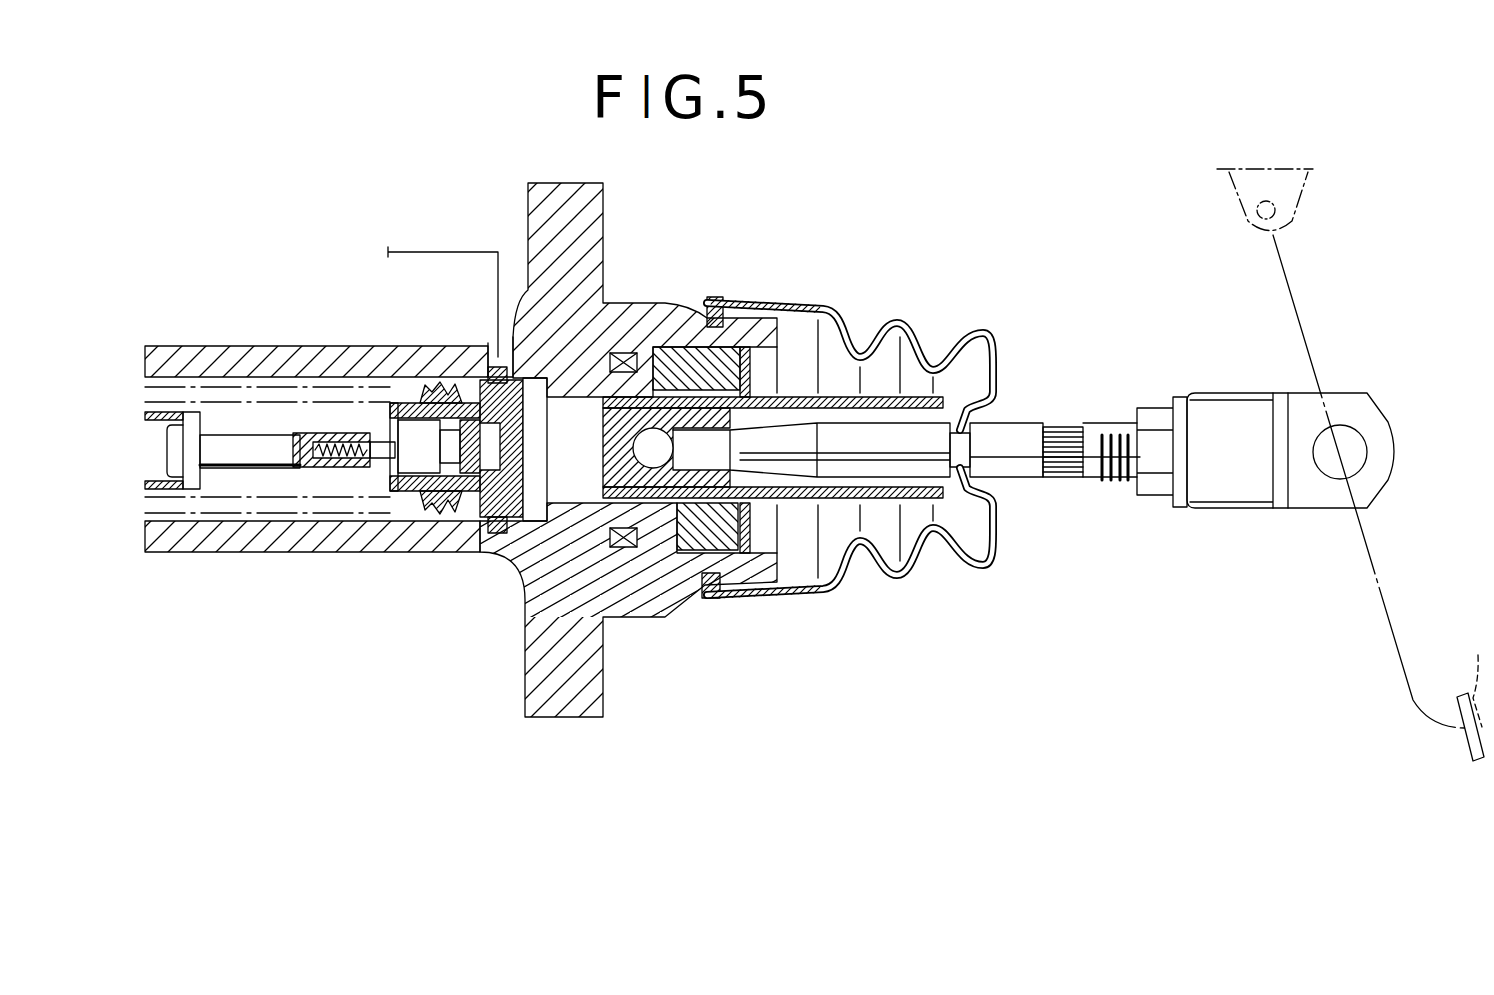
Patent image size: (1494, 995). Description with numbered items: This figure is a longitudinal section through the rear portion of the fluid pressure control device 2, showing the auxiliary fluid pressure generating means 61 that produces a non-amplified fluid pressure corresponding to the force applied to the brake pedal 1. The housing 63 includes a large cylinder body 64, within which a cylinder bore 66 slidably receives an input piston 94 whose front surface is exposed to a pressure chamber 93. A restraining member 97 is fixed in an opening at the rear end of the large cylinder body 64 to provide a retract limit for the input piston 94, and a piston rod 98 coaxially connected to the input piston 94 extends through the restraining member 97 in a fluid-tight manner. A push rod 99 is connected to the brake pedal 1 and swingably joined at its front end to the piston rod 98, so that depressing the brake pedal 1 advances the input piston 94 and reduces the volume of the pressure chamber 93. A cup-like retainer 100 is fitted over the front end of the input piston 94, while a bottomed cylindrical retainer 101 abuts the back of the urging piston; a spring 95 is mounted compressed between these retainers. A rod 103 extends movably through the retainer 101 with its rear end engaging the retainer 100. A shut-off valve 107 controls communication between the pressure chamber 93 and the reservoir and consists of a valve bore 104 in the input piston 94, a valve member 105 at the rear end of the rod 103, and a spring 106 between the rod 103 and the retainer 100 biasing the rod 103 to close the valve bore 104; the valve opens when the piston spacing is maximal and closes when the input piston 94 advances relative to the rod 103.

The brake pedal 1 is at (1350, 465).
The fluid pressure control device 2 is at (285, 606).
The auxiliary fluid pressure generating means 61 is at (400, 512).
The housing 63 is at (170, 560).
The large cylinder body 64 is at (345, 553).
The cylinder bore 66 is at (225, 387).
The pressure chamber 93 is at (247, 490).
The input piston 94 is at (492, 518).
The spring 95 is at (430, 505).
The restraining member 97 is at (685, 363).
The piston rod 98 is at (840, 498).
The push rod 99 is at (1022, 430).
The cup-like retainer 100 is at (417, 403).
The bottomed cylindrical retainer 101 is at (180, 420).
The rod 103 is at (263, 440).
The valve bore 104 is at (535, 428).
The valve member 105 is at (540, 506).
The spring 106 is at (398, 403).
The shut-off valve 107 is at (482, 375).